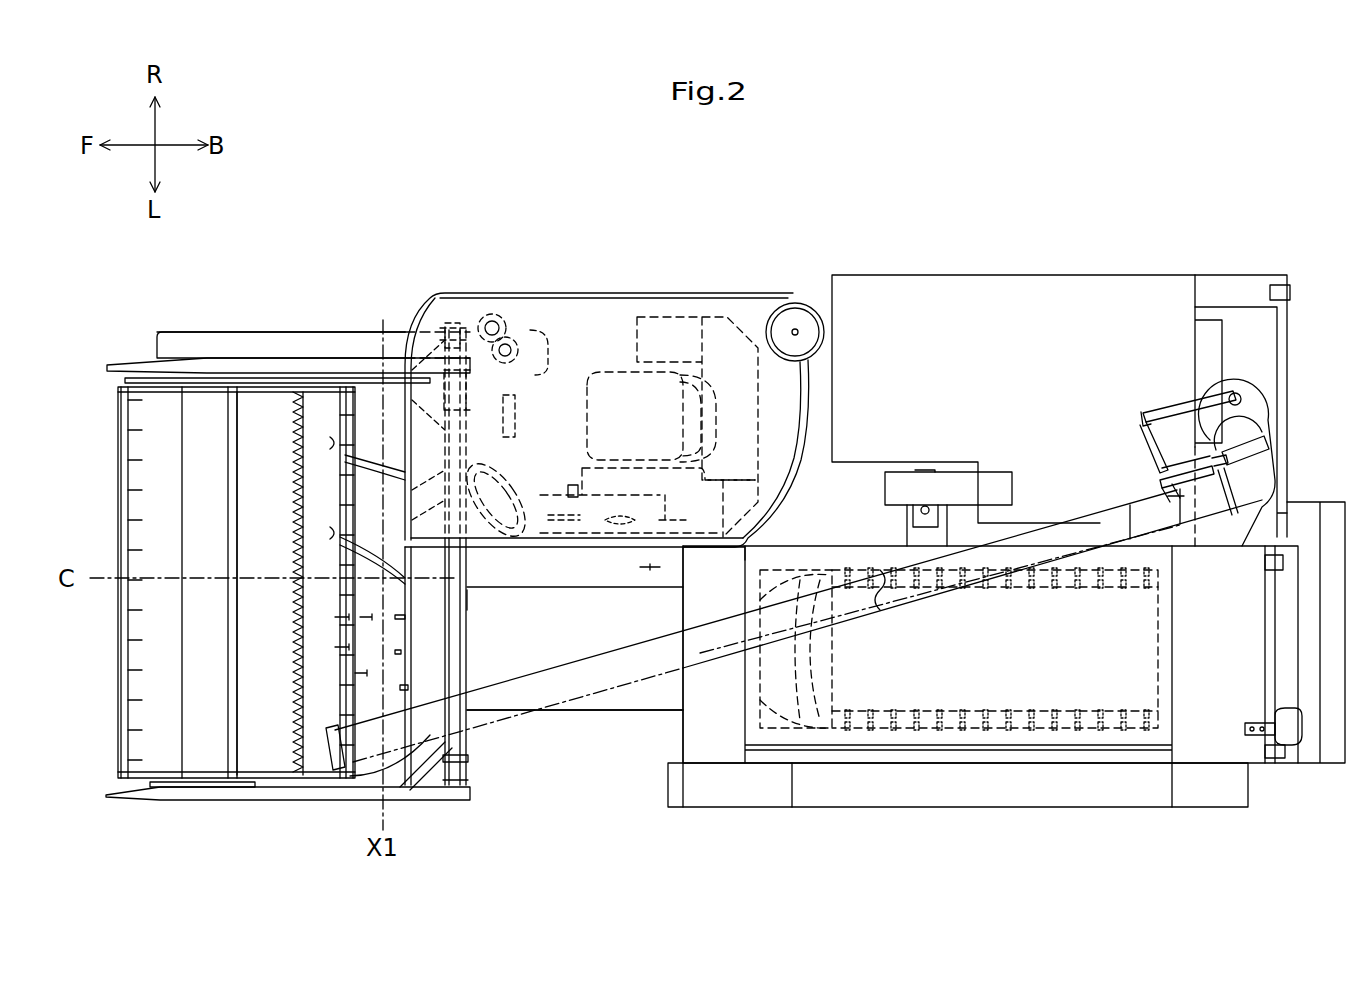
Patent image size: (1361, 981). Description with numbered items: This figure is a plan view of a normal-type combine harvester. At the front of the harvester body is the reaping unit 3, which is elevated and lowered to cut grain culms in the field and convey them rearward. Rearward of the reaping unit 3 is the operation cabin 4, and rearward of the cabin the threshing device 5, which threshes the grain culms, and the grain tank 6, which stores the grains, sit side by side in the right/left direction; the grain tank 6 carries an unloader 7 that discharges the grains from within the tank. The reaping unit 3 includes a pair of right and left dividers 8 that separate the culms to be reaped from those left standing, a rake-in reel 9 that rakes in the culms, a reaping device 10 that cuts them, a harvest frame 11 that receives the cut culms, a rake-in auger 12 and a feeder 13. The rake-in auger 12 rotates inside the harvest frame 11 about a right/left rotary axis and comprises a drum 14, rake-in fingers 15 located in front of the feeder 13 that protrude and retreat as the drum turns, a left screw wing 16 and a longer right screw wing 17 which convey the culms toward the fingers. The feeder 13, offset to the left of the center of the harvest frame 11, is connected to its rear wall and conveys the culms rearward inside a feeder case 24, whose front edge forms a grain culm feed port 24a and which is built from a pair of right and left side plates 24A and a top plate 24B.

The reaping unit 3 is at (296, 299).
The operation cabin 4 is at (648, 293).
The threshing device 5 is at (1045, 738).
The grain tank 6 is at (1035, 298).
The unloader 7 is at (1090, 510).
The divider 8 is at (138, 368).
The rake-in reel 9 is at (108, 530).
The reaping device 10 is at (300, 650).
The harvest frame 11 is at (432, 656).
The rake-in auger 12 is at (430, 641).
The feeder 13 is at (588, 752).
The drum 14 is at (368, 505).
The rake-in fingers 15 is at (345, 655).
The left screw wing 16 is at (425, 752).
The right screw wing 17 is at (330, 443).
The feeder case 24 is at (606, 676).
The grain culm feed port 24a is at (470, 610).
The side plates 24A is at (632, 572).
The top plate 24B is at (580, 625).